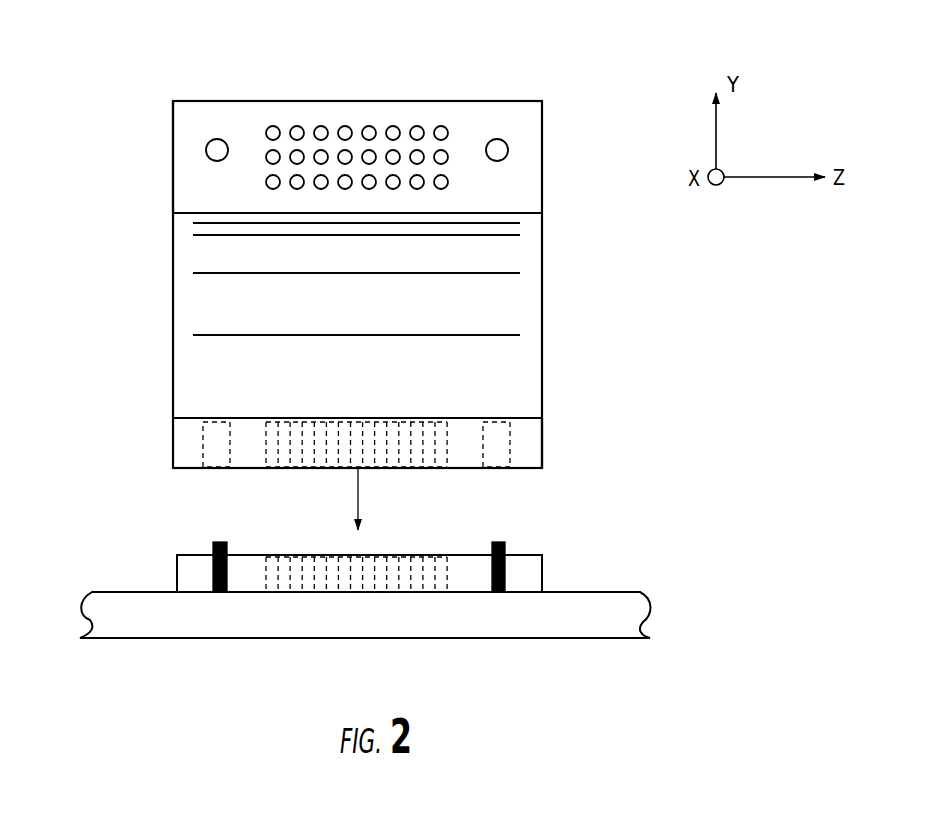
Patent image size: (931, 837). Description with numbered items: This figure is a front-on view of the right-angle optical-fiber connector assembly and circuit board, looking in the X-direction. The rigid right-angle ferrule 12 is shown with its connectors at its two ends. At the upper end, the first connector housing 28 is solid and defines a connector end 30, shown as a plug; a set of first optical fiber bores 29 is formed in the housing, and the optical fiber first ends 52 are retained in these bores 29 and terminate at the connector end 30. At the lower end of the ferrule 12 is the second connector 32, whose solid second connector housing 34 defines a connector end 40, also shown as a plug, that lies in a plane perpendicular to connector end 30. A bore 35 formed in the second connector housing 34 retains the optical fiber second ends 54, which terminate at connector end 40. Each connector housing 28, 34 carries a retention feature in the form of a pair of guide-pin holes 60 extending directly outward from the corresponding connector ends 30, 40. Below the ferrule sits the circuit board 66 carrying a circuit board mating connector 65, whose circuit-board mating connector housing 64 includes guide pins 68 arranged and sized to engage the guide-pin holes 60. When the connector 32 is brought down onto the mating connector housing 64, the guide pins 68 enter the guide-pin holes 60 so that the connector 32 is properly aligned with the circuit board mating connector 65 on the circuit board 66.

The right-angle ferrule 12 is at (542, 320).
The first connector housing 28 is at (173, 153).
The first optical fiber bores 29 is at (390, 105).
The connector end 30 is at (344, 244).
The second connector 32 is at (555, 458).
The second connector housing 34 is at (401, 450).
The second optical fiber bore 35 is at (326, 467).
The connector end 40 is at (185, 468).
The optical fiber first ends 52 is at (418, 133).
The optical fiber second ends 54 is at (272, 468).
The guide-pin holes 60 is at (508, 150).
The circuit-board mating connector housing 64 is at (417, 541).
The circuit board mating connector 65 is at (362, 564).
The circuit board 66 is at (618, 592).
The guide pins 68 is at (213, 545).